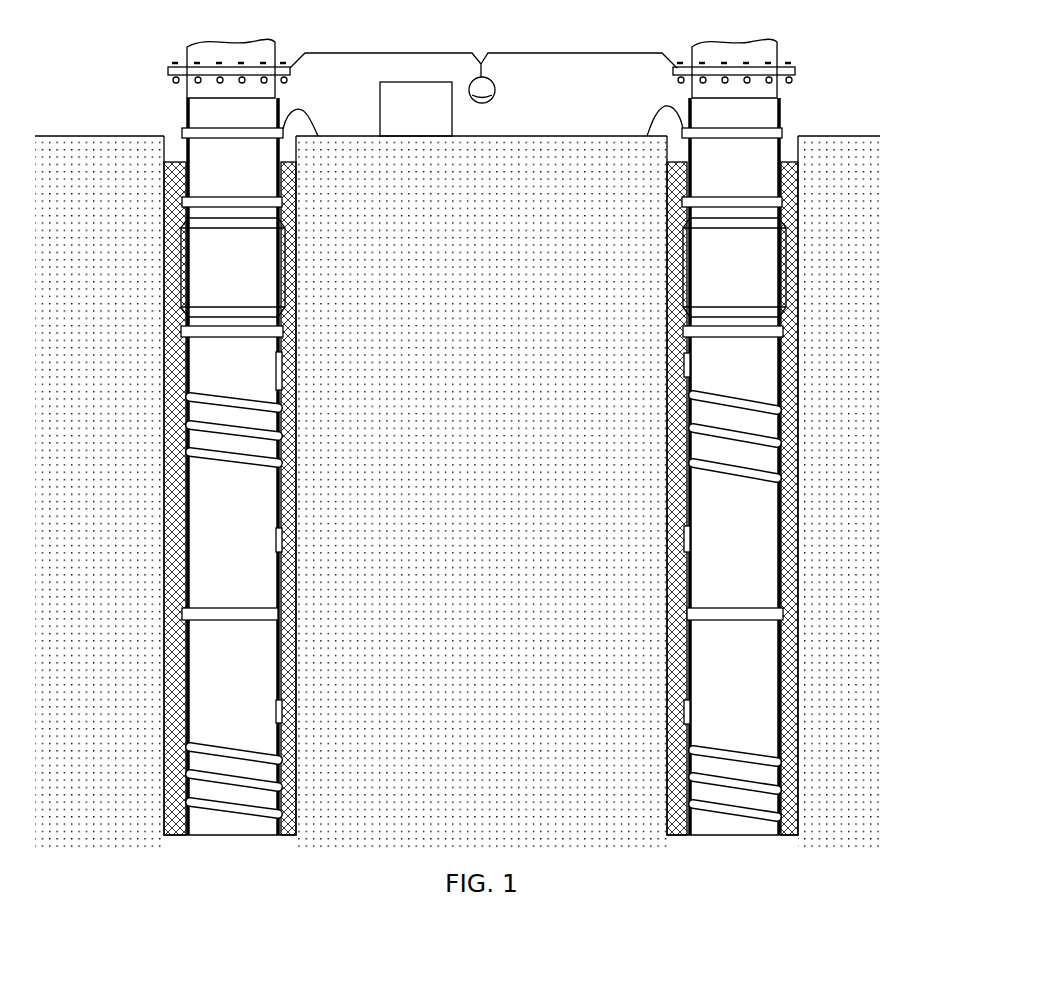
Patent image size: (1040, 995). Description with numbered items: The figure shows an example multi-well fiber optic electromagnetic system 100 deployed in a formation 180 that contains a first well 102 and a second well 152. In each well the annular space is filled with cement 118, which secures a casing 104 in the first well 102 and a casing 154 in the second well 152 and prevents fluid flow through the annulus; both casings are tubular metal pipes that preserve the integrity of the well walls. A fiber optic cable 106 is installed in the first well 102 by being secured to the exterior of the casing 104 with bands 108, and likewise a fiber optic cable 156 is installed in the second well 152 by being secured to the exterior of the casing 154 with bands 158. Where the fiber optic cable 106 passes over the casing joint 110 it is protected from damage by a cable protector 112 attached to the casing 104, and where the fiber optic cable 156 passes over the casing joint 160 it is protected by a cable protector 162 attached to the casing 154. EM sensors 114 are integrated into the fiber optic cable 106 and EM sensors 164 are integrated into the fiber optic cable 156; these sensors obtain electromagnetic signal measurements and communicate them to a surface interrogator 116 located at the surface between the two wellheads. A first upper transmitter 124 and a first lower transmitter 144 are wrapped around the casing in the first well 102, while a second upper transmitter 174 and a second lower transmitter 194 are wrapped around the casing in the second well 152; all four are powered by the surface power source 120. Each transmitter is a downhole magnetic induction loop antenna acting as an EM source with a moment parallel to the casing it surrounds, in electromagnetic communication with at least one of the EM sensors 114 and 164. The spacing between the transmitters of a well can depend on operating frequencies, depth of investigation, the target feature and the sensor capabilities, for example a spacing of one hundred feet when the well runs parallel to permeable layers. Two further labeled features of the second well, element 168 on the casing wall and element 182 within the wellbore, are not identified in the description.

The well system 100 is at (960, 116).
The first well 102 is at (283, 215).
The casing 104 is at (258, 163).
The fiber optic cable 106 is at (312, 128).
The bands 108 is at (212, 130).
The casing joint 110 is at (240, 278).
The cable protector 112 is at (290, 246).
The EM sensors 114 is at (284, 366).
The surface interrogator 116 is at (433, 122).
The cement 118 is at (168, 190).
The surface power source 120 is at (495, 91).
The first upper transmitter 124 is at (192, 402).
The first lower transmitter 144 is at (196, 784).
The second well 152 is at (668, 213).
The casing 154 is at (763, 172).
The fiber optic cable 156 is at (650, 117).
The bands 158 is at (716, 130).
The casing joint 160 is at (732, 278).
The cable protector 162 is at (680, 244).
The EM sensors 164 is at (684, 365).
The casing wall 168 is at (667, 486).
The second upper transmitter 174 is at (780, 450).
The formation 180 is at (513, 226).
The wellbore interior 182 is at (742, 542).
The second lower transmitter 194 is at (780, 762).